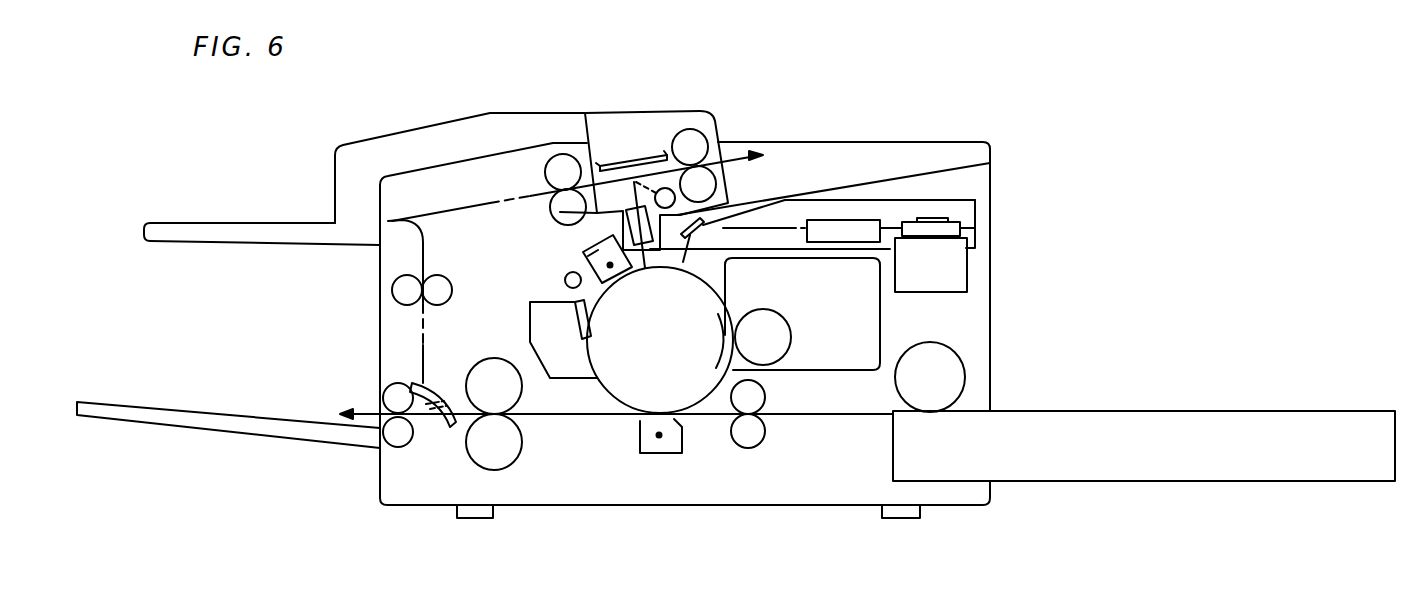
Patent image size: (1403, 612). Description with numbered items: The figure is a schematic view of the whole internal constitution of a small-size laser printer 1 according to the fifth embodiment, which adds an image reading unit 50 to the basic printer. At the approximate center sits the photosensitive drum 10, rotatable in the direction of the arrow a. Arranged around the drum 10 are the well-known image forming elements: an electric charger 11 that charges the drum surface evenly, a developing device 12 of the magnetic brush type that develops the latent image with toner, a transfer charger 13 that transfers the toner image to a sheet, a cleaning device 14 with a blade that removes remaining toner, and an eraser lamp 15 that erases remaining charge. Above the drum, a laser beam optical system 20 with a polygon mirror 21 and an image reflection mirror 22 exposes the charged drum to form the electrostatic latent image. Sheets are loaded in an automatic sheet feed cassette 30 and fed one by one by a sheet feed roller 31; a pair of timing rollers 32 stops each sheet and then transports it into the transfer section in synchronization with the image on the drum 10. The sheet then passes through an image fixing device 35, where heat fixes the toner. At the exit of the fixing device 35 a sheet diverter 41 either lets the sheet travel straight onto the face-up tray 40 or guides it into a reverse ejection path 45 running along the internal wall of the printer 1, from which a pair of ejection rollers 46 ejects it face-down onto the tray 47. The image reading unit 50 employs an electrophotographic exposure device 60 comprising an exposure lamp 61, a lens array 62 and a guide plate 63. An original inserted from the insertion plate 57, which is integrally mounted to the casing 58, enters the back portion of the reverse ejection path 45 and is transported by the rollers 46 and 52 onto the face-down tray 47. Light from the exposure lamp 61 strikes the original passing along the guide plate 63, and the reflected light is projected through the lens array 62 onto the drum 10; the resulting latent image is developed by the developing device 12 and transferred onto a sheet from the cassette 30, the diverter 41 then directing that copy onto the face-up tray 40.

The printer 1 is at (997, 292).
The photosensitive drum 10 is at (660, 372).
The electric charger 11 is at (584, 254).
The developing device 12 is at (880, 318).
The transfer charger 13 is at (663, 448).
The cleaning device 14 is at (566, 372).
The eraser lamp 15 is at (564, 281).
The laser beam optical system 20 is at (882, 234).
The polygon mirror 21 is at (976, 228).
The image reflection mirror 22 is at (724, 210).
The automatic sheet feed cassette 30 is at (1057, 483).
The sheet feed roller 31 is at (966, 378).
The timing rollers 32 is at (762, 441).
The image fixing device 35 is at (521, 466).
The tray 40 is at (222, 415).
The sheet diverter 41 is at (438, 426).
The reverse ejection path 45 is at (544, 267).
The ejection rollers 46 is at (563, 154).
The tray 47 is at (905, 177).
The image reading unit 50 is at (545, 155).
The rollers 52 is at (706, 141).
The insertion plate 57 is at (250, 223).
The casing 58 is at (415, 129).
The electrophotographic exposure device 60 is at (618, 157).
The exposure lamp 61 is at (665, 188).
The lens array 62 is at (560, 213).
The guide plate 63 is at (636, 170).
The rotation direction arrow a is at (712, 345).